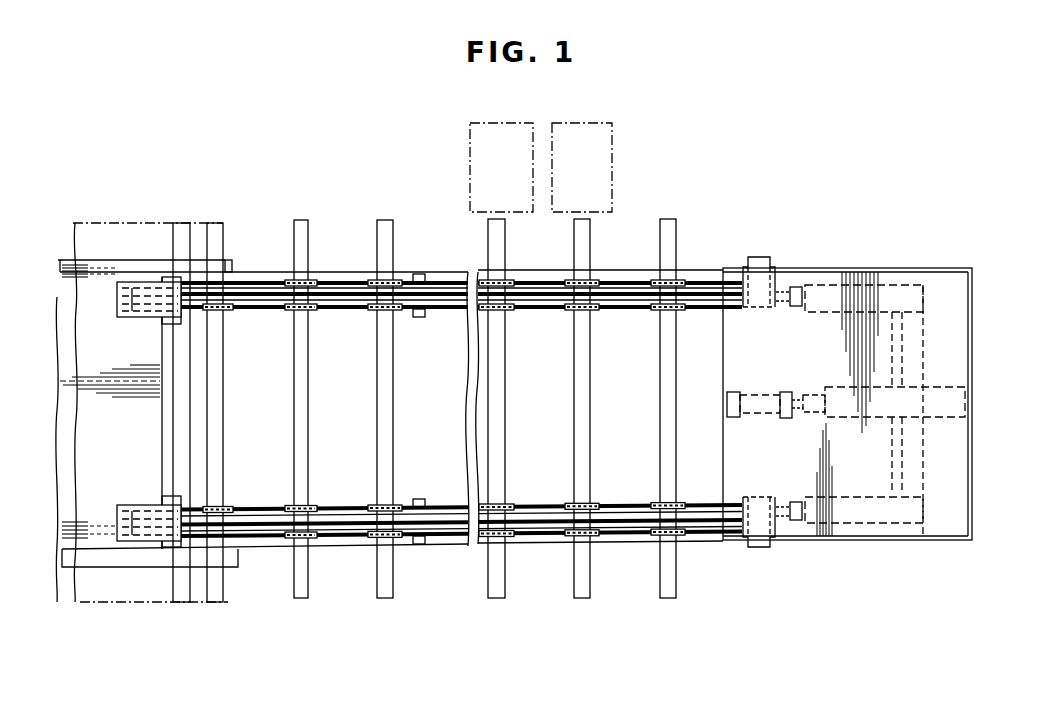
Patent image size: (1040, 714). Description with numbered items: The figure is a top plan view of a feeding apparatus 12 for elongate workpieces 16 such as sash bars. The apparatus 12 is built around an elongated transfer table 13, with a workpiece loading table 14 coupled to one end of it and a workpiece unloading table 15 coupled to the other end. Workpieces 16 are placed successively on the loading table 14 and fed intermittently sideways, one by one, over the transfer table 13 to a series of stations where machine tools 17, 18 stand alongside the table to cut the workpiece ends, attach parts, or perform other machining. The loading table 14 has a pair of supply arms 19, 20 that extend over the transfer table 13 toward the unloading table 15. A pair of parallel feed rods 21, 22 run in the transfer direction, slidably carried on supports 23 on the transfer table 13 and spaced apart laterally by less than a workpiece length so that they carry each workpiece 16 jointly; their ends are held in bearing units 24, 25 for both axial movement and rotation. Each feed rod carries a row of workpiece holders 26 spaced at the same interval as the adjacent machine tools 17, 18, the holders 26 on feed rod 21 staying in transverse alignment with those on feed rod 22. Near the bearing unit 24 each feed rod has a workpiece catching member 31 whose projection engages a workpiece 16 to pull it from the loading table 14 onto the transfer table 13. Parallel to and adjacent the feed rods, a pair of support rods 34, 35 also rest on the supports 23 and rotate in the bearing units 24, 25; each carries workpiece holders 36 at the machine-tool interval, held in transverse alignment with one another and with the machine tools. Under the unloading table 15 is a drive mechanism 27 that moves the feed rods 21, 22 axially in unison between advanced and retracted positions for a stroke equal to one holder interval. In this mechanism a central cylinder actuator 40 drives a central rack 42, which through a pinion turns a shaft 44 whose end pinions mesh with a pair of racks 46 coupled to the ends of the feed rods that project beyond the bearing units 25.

The feeding apparatus 12 is at (608, 600).
The transfer table 13 is at (266, 548).
The workpiece loading table 14 is at (57, 301).
The workpiece unloading table 15 is at (880, 268).
The workpieces 16 is at (182, 222).
The machine tool 17 is at (470, 140).
The machine tool 18 is at (607, 148).
The supply arm 19 is at (233, 262).
The supply arm 20 is at (203, 560).
The feed rod 21 is at (536, 307).
The feed rod 22 is at (536, 504).
The supports 23 is at (418, 274).
The bearing unit 24 is at (132, 317).
The bearing unit 25 is at (778, 284).
The workpiece holders 26 is at (310, 309).
The drive mechanism 27 is at (922, 326).
The workpiece catching member 31 is at (225, 310).
The support rod 34 is at (535, 282).
The support rod 35 is at (536, 537).
The workpiece holders 36 is at (310, 283).
The cylinder actuator 40 is at (753, 392).
The central rack 42 is at (810, 394).
The shaft 44 is at (907, 347).
The racks 46 is at (812, 284).